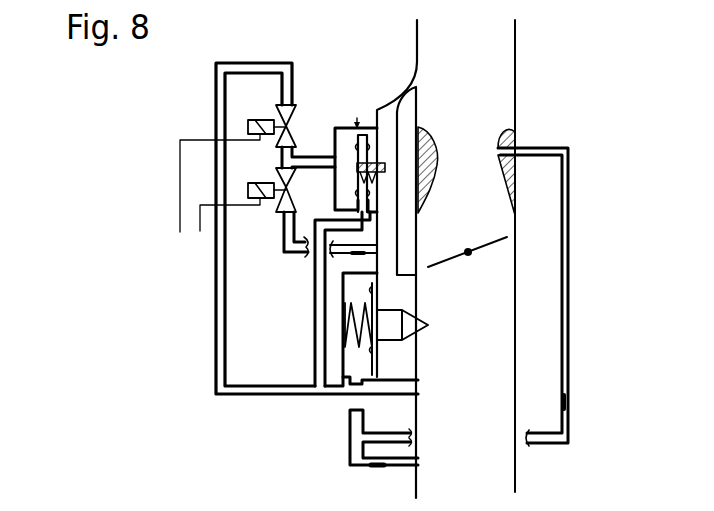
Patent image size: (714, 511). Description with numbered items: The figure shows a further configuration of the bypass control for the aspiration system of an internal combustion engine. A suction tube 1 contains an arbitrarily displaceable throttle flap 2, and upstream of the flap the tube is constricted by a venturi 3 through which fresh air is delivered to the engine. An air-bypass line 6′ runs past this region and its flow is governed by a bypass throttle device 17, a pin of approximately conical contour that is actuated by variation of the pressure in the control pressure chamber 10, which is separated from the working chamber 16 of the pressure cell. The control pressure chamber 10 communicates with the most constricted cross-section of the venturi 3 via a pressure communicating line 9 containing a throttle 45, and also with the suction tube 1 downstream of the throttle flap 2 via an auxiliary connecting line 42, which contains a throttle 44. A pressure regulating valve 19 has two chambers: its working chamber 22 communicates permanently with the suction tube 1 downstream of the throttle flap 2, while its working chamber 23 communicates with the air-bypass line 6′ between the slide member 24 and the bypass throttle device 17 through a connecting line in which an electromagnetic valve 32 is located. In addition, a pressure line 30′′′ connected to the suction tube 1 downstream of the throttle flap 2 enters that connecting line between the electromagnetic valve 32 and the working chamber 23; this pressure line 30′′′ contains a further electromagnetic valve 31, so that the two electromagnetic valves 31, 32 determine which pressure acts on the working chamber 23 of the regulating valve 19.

The suction tube 1 is at (518, 356).
The throttle flap 2 is at (477, 254).
The venturi 3 is at (520, 135).
The air-bypass line 6′ is at (408, 80).
The pressure communicating line 9 is at (565, 387).
The control pressure chamber 10 is at (343, 355).
The working chamber 16 is at (399, 359).
The bypass throttle device 17 is at (408, 327).
The pressure regulating valve 19 is at (357, 120).
The working chamber 22 is at (372, 145).
The working chamber 23 is at (345, 138).
The slide member 24 is at (377, 167).
The pressure line 30′′′ is at (220, 324).
The electromagnetic valve 31 is at (287, 118).
The electromagnetic valve 32 is at (279, 212).
The auxiliary connecting line 42 is at (410, 462).
The throttle 44 is at (378, 466).
The throttle 45 is at (568, 405).